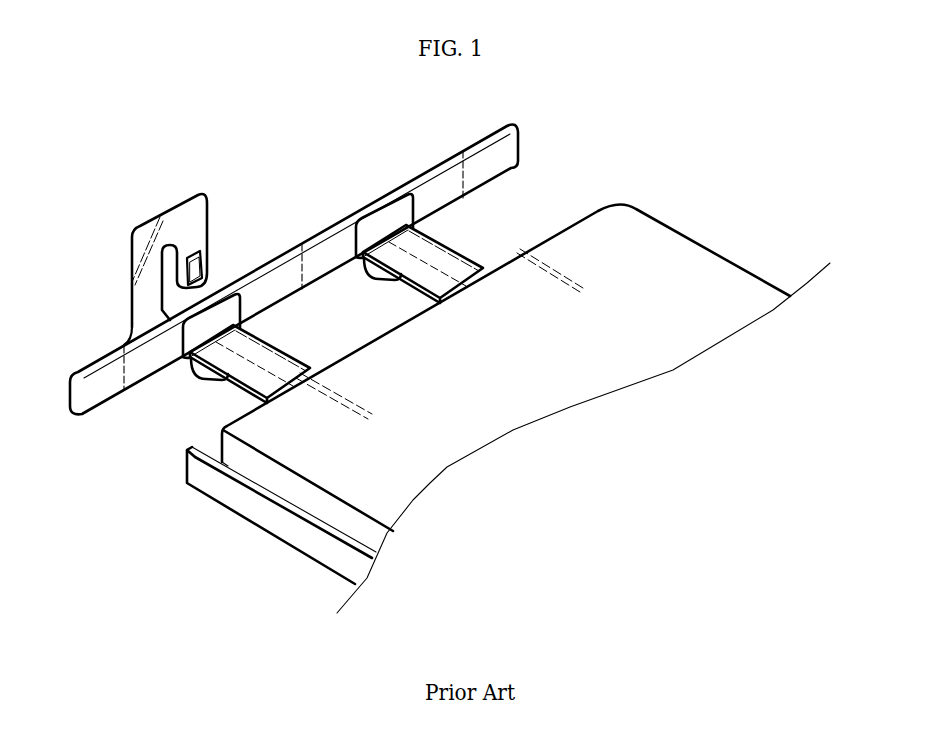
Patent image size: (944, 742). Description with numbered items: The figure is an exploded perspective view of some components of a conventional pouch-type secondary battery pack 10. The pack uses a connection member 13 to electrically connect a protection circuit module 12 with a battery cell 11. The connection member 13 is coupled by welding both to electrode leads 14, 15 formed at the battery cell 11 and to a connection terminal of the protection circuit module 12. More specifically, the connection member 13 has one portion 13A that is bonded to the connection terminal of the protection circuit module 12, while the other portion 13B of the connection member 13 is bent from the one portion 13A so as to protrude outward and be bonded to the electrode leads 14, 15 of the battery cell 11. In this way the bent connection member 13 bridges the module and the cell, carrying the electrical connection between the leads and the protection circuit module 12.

The secondary battery pack 10 is at (180, 120).
The battery cell 11 is at (709, 228).
The protection circuit module 12 is at (111, 335).
The connection member 13 is at (241, 278).
The one portion of the connection member 13A is at (188, 338).
The other portion of the connection member 13B is at (203, 370).
The electrode lead 14 is at (272, 362).
The electrode lead 15 is at (445, 262).